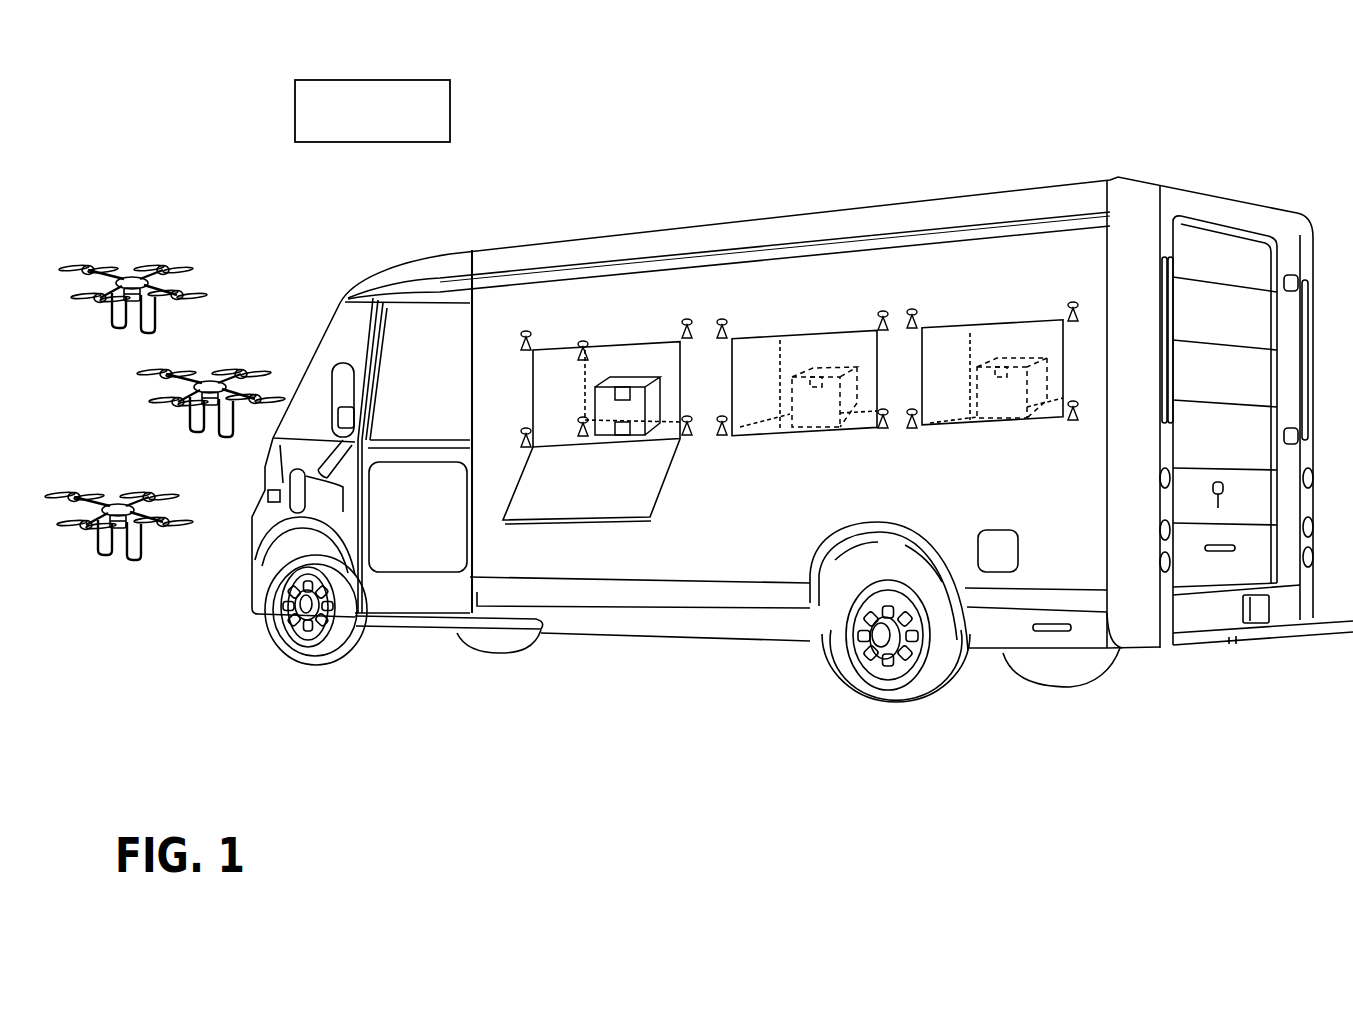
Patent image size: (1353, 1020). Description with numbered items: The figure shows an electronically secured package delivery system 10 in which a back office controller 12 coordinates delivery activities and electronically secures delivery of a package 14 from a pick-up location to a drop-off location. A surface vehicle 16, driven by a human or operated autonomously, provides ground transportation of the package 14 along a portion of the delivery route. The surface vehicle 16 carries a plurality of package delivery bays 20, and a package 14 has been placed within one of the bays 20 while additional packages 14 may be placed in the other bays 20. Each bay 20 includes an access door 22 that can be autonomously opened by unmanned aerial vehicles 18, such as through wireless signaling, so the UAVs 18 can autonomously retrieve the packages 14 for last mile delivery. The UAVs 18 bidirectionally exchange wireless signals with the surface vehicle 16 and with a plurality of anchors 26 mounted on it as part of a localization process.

The electronically secured package delivery system 10 is at (1076, 62).
The back office controller 12 is at (372, 80).
The package 14 is at (628, 378).
The surface vehicle 16 is at (1045, 185).
The unmanned aerial vehicle 18 is at (133, 281).
The package delivery bay 20 is at (597, 333).
The access door 22 is at (598, 520).
The anchor 26 is at (580, 423).